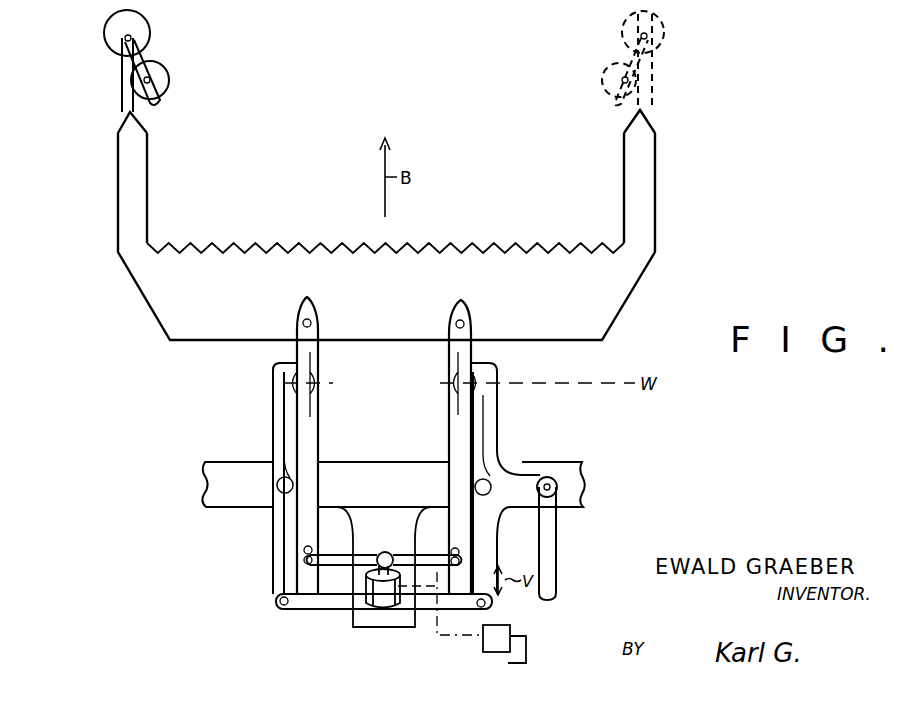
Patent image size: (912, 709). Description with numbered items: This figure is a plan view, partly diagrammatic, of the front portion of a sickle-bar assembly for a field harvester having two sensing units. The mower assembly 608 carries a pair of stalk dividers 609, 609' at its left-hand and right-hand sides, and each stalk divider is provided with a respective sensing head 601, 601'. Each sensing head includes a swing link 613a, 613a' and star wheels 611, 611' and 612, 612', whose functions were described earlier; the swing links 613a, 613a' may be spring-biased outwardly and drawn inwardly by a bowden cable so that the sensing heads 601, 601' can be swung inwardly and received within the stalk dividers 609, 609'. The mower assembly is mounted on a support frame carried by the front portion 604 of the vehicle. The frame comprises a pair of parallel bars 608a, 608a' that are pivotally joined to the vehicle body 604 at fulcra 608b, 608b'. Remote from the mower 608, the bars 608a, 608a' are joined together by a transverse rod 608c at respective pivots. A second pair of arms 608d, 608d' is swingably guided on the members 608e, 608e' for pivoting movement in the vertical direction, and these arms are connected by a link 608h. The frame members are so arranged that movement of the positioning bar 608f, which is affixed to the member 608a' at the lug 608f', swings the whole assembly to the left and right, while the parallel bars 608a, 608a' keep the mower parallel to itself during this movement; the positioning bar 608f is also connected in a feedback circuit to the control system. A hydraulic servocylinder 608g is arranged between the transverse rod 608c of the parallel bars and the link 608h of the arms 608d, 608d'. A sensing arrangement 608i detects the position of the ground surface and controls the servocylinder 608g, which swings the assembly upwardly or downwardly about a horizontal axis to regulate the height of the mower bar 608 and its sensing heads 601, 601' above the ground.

The sensing head 601 is at (104, 73).
The star wheel 611 is at (155, 33).
The star wheel 612 is at (173, 80).
The swing link 613a is at (173, 79).
The stalk divider 609 is at (386, 226).
The mower assembly 608 is at (299, 242).
The sensing head 601' is at (681, 62).
The star wheel 611' is at (682, 32).
The star wheel 612' is at (592, 80).
The swing link 613a' is at (608, 90).
The stalk divider 609' is at (612, 181).
The guide member 608e is at (272, 446).
The guide member 608e' is at (505, 447).
The arm 608d is at (334, 393).
The arm 608d' is at (427, 405).
The parallel bar 608a is at (242, 478).
The parallel bar 608a' is at (517, 478).
The fulcrum 608b is at (239, 519).
The fulcrum 608b' is at (531, 461).
The transverse rod 608c is at (314, 610).
The front portion of the vehicle 604 is at (205, 505).
The positioning bar 608f is at (574, 543).
The lug 608f' is at (570, 469).
The link 608h is at (362, 558).
The hydraulic servocylinder 608g is at (380, 600).
The sensing arrangement 608i is at (506, 655).